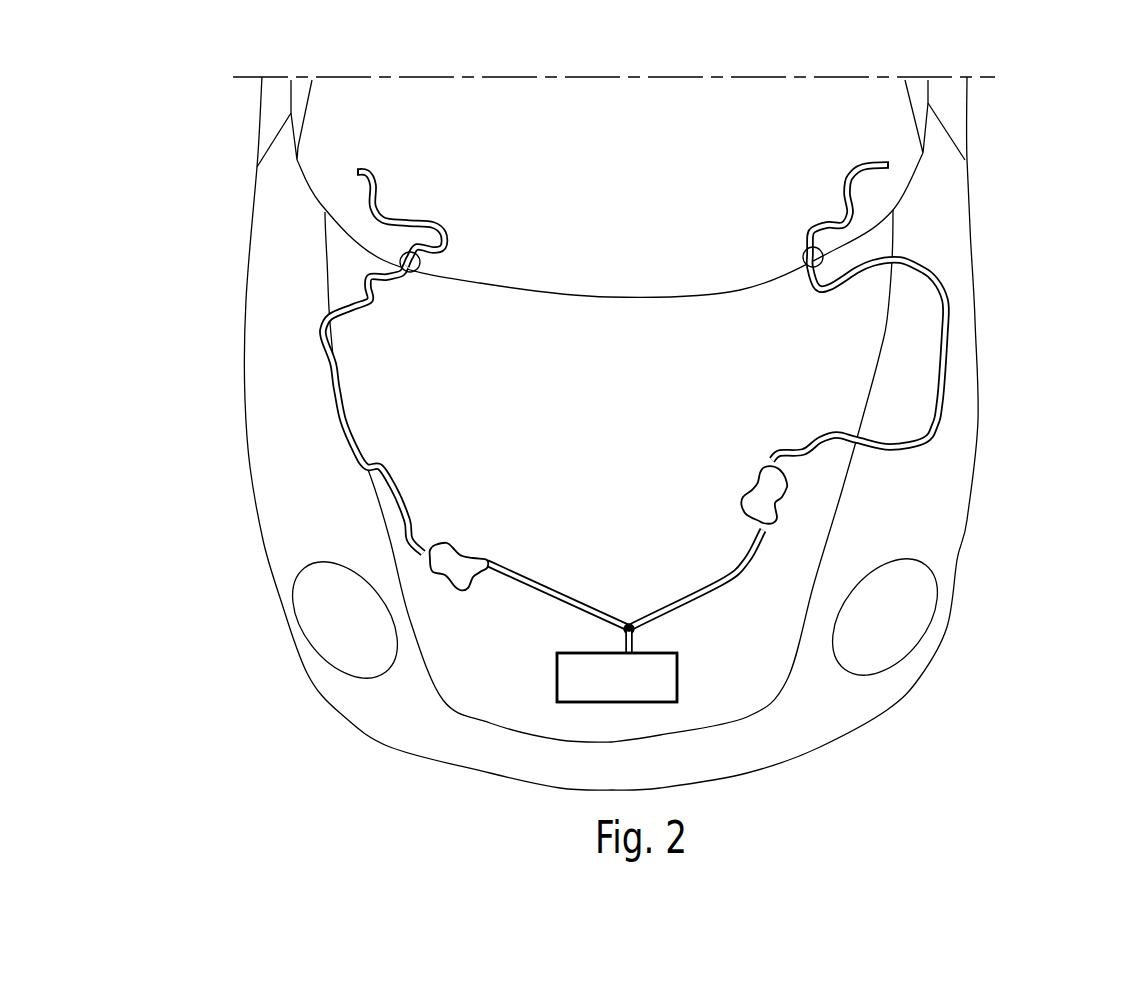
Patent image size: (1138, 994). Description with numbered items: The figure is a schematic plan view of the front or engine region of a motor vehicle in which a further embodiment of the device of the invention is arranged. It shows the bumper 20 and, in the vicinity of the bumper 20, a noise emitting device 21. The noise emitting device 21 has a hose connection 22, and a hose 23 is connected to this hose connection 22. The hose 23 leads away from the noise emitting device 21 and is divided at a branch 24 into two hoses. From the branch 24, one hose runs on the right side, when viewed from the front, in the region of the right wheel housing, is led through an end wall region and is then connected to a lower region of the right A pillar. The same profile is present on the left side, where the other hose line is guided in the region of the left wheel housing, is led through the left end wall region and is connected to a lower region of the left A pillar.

The bumper 20 is at (829, 705).
The noise emitting device 21 is at (630, 687).
The hose connection 22 is at (629, 653).
The hose 23 is at (629, 641).
The branch 24 is at (629, 628).